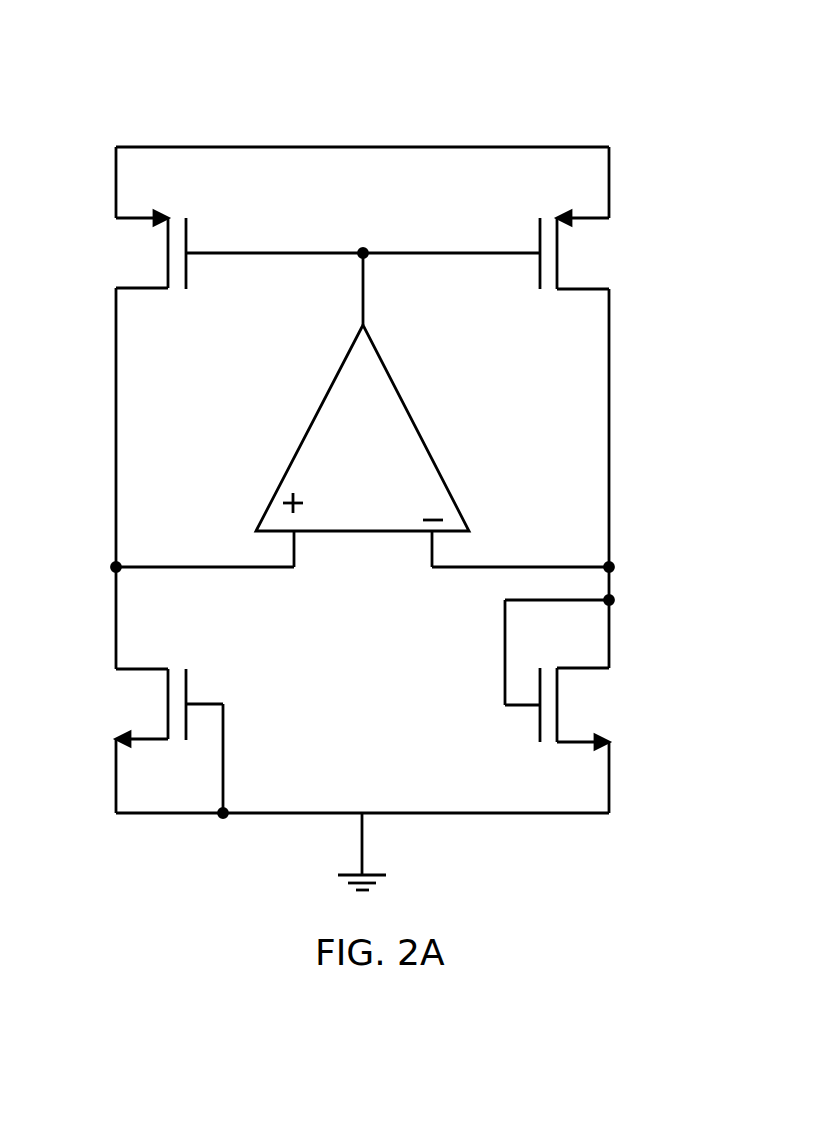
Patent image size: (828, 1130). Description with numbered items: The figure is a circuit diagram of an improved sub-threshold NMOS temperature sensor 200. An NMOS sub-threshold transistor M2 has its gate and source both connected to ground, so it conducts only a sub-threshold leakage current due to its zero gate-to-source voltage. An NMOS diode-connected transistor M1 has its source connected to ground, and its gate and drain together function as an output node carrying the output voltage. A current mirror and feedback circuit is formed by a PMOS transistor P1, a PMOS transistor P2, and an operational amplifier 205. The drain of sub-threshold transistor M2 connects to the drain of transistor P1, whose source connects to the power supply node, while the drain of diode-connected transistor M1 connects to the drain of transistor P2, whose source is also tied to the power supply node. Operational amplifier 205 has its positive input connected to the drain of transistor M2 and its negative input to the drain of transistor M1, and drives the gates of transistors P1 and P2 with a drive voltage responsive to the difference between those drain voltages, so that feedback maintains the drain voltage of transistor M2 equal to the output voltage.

The sub-threshold NMOS temperature sensor 200 is at (400, 47).
The operational amplifier 205 is at (408, 410).
The PMOS transistor P1 is at (132, 250).
The PMOS transistor P2 is at (592, 250).
The NMOS diode-connected transistor M1 is at (596, 708).
The NMOS sub-threshold transistor M2 is at (130, 707).